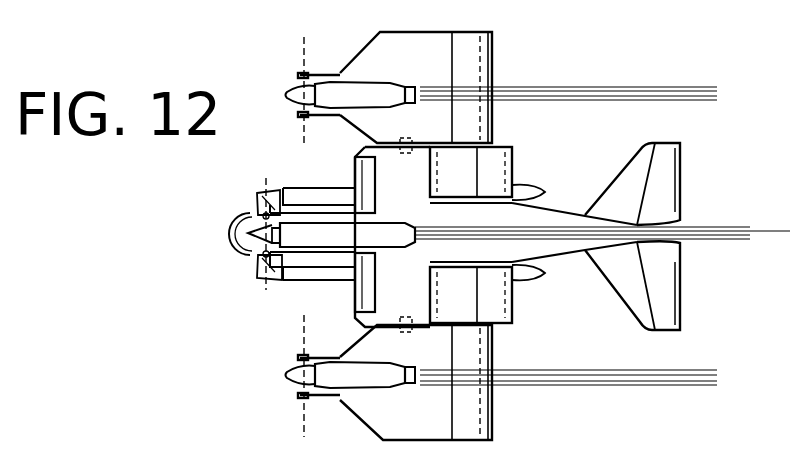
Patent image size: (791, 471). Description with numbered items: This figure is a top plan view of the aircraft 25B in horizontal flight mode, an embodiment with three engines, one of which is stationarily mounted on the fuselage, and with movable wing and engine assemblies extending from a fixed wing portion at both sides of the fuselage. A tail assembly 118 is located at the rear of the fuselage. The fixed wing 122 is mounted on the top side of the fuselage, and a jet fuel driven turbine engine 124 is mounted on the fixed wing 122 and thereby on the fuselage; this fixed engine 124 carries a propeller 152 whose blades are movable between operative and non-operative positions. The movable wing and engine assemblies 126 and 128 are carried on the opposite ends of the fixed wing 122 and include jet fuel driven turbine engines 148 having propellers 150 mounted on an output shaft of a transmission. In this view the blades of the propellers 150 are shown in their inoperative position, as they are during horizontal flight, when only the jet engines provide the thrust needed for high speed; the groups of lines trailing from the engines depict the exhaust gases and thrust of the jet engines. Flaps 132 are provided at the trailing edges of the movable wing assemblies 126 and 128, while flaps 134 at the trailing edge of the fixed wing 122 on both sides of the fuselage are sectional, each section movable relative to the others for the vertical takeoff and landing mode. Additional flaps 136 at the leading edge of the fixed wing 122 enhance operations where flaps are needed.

The tail assembly 118 is at (683, 148).
The fixed wing 122 is at (406, 189).
The jet fuel driven turbine engine 124 is at (310, 232).
The movable wing and engine assembly 126 is at (397, 427).
The movable wing and engine assembly 128 is at (407, 43).
The flaps 132 is at (473, 57).
The flaps 134 is at (492, 176).
The additional flaps 136 is at (364, 173).
The jet fuel driven turbine engines 148 is at (309, 358).
The propellers 150 is at (318, 74).
The propeller 152 is at (302, 215).
The aircraft 25B is at (562, 172).